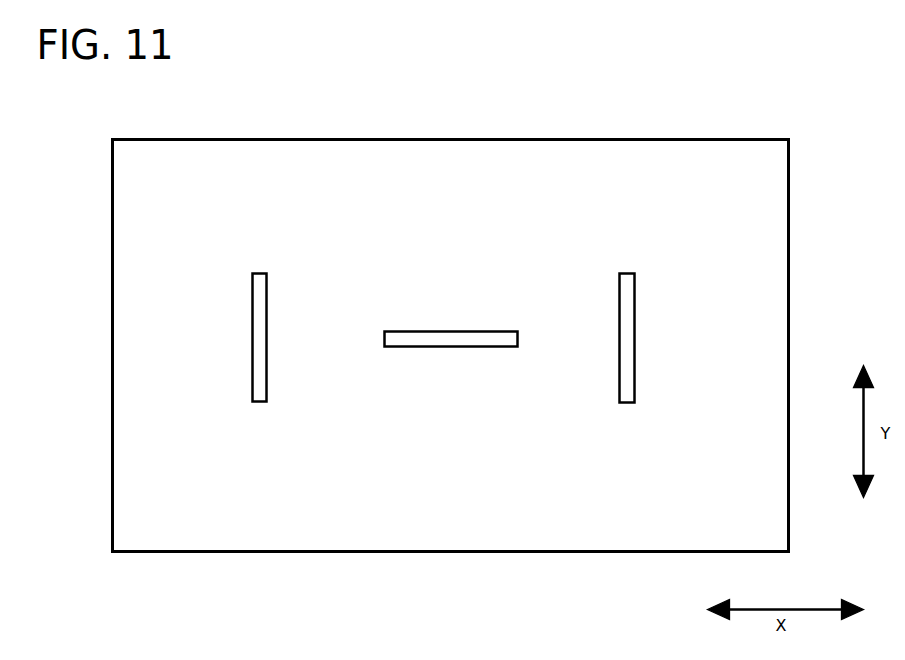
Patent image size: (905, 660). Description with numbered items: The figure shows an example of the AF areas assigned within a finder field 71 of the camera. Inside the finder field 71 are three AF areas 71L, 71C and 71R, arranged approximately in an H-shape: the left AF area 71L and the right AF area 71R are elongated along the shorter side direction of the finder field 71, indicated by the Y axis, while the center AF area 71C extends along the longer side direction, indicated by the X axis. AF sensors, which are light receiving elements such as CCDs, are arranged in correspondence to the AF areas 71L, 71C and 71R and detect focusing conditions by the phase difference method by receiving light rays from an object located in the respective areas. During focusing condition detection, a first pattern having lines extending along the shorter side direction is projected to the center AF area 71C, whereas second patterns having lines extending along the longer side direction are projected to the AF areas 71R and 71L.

The finder field 71 is at (541, 128).
The left AF area 71L is at (255, 401).
The center AF area 71C is at (442, 346).
The right AF area 71R is at (624, 402).